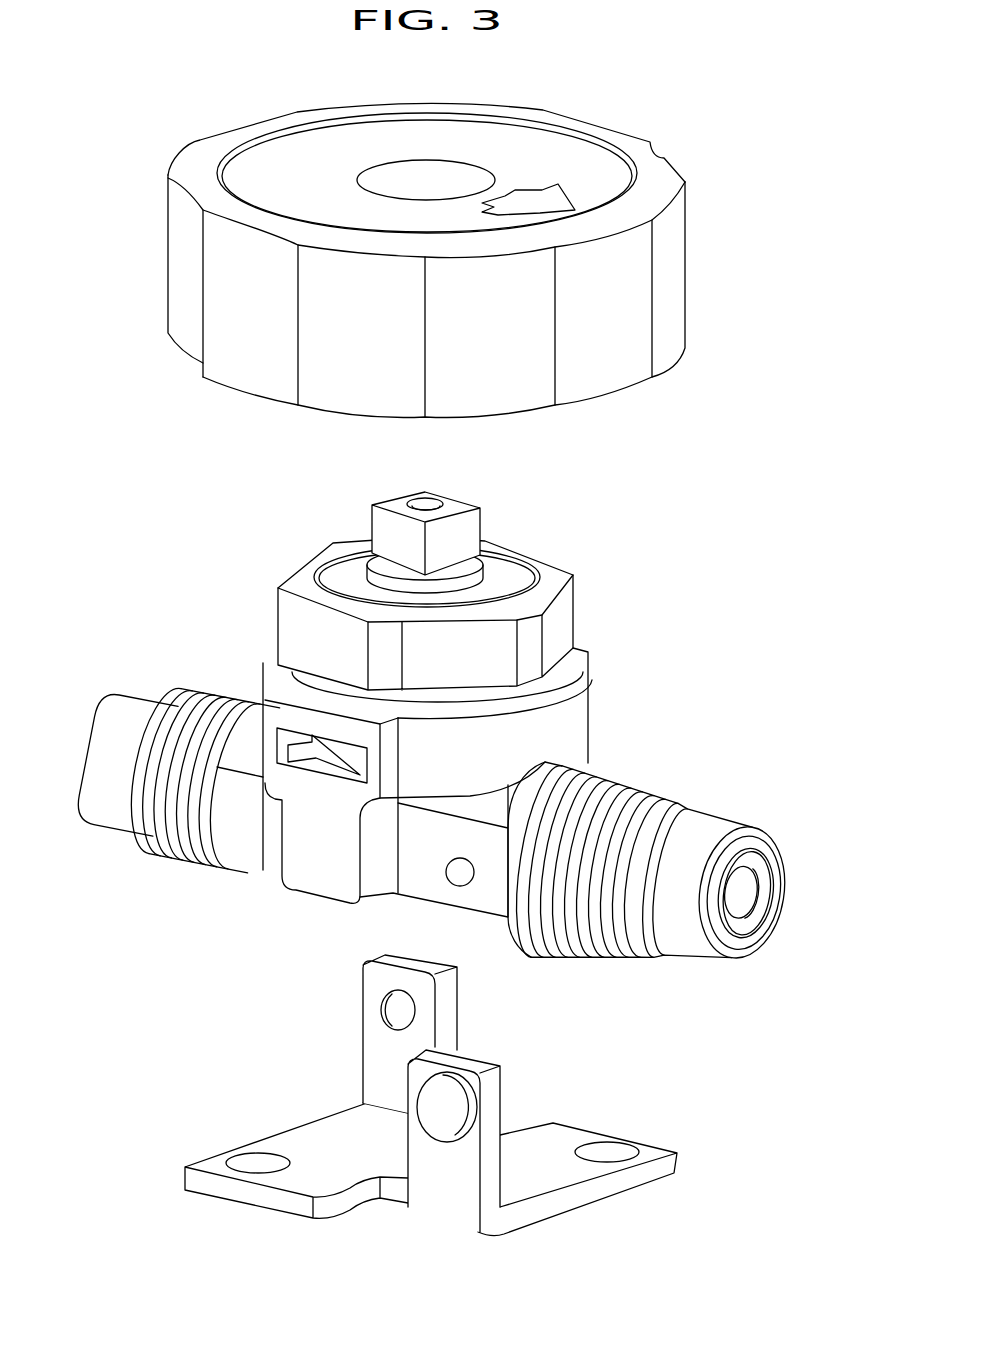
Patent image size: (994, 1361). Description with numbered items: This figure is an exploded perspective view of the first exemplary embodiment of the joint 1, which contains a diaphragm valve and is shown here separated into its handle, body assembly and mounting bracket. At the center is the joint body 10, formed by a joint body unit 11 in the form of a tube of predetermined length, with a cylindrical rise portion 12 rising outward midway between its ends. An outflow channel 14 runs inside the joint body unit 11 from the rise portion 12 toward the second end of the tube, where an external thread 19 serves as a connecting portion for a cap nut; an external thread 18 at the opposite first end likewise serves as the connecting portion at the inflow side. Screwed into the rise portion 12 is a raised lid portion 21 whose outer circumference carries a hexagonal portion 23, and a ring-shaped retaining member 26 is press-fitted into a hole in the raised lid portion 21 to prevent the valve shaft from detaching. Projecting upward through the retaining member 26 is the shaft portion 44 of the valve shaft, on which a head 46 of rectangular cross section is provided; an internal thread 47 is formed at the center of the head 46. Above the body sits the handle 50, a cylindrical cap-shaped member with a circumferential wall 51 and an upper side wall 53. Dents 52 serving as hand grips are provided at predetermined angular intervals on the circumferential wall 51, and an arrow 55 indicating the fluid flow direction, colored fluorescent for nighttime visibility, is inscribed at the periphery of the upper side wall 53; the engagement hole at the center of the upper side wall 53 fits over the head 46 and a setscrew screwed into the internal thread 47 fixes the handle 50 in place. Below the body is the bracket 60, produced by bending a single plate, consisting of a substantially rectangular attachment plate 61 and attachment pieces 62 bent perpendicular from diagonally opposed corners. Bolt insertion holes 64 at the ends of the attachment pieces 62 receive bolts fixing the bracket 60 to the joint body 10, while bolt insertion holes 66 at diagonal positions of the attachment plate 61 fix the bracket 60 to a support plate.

The joint 1 is at (456, 730).
The joint body 10 is at (312, 888).
The joint body unit 11 is at (674, 882).
The rise portion 12 is at (580, 717).
The outflow channel 14 is at (737, 895).
The external thread 18 is at (142, 853).
The external thread 19 is at (613, 957).
The raised lid portion 21 is at (472, 613).
The hexagonal portion 23 is at (568, 607).
The retaining member 26 is at (332, 570).
The shaft portion 44 is at (483, 573).
The head 46 is at (484, 503).
The internal thread 47 is at (437, 502).
The handle 50 is at (410, 258).
The circumferential wall 51 is at (242, 380).
The dents 52 is at (180, 295).
The upper side wall 53 is at (363, 135).
The arrow 55 is at (562, 203).
The bracket 60 is at (422, 1119).
The attachment plate 61 is at (422, 1179).
The attachment pieces 62 is at (445, 1093).
The bolt insertion holes 64 is at (385, 1015).
The bolt insertion holes 66 is at (630, 1150).